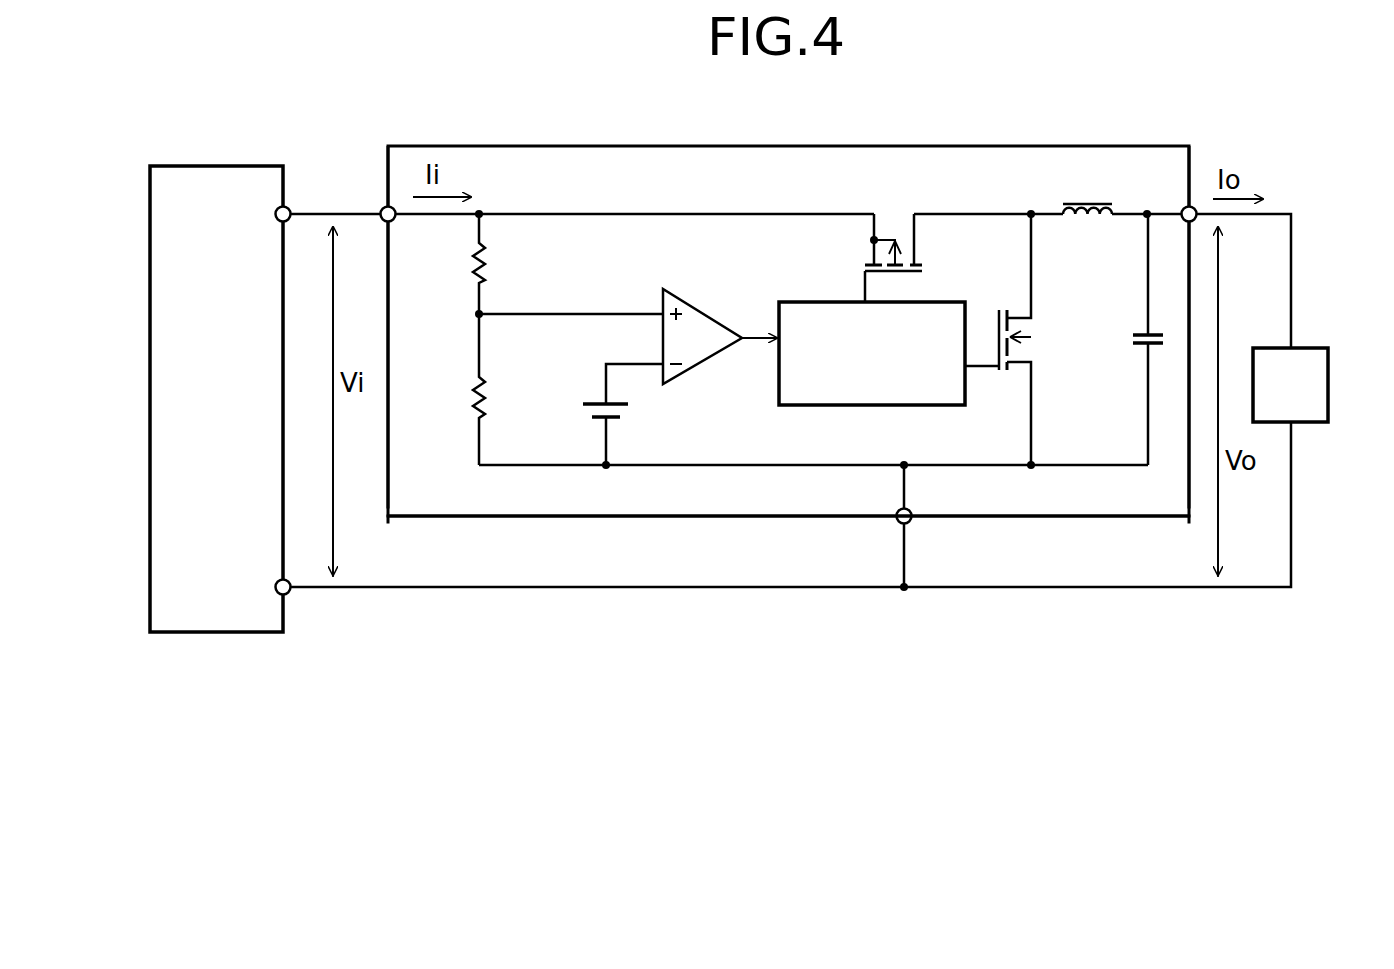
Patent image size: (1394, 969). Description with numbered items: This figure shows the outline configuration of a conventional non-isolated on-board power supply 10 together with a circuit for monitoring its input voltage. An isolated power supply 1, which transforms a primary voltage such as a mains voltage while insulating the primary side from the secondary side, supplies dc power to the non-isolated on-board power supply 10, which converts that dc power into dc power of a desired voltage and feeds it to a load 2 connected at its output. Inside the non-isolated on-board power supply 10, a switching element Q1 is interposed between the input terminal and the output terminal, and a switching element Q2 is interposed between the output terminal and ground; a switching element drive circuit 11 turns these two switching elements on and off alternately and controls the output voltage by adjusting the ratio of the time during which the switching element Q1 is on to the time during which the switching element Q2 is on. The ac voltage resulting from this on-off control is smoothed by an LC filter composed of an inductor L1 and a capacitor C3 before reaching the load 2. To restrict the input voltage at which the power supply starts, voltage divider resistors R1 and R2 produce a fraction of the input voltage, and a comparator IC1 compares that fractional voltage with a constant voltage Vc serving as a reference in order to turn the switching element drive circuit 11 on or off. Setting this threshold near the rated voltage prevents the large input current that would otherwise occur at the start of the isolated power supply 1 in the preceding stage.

The isolated power supply 1 is at (245, 166).
The load 2 is at (1302, 347).
The non-isolated on-board power supply 10 is at (1135, 147).
The switching element drive circuit 11 is at (862, 405).
The voltage divider resistor R1 is at (501, 264).
The voltage divider resistor R2 is at (501, 389).
The comparator IC1 is at (703, 312).
The constant voltage Vc is at (617, 420).
The switching element Q1 is at (915, 258).
The switching element Q2 is at (1023, 339).
The inductor L1 is at (1087, 192).
The capacitor C3 is at (1131, 339).